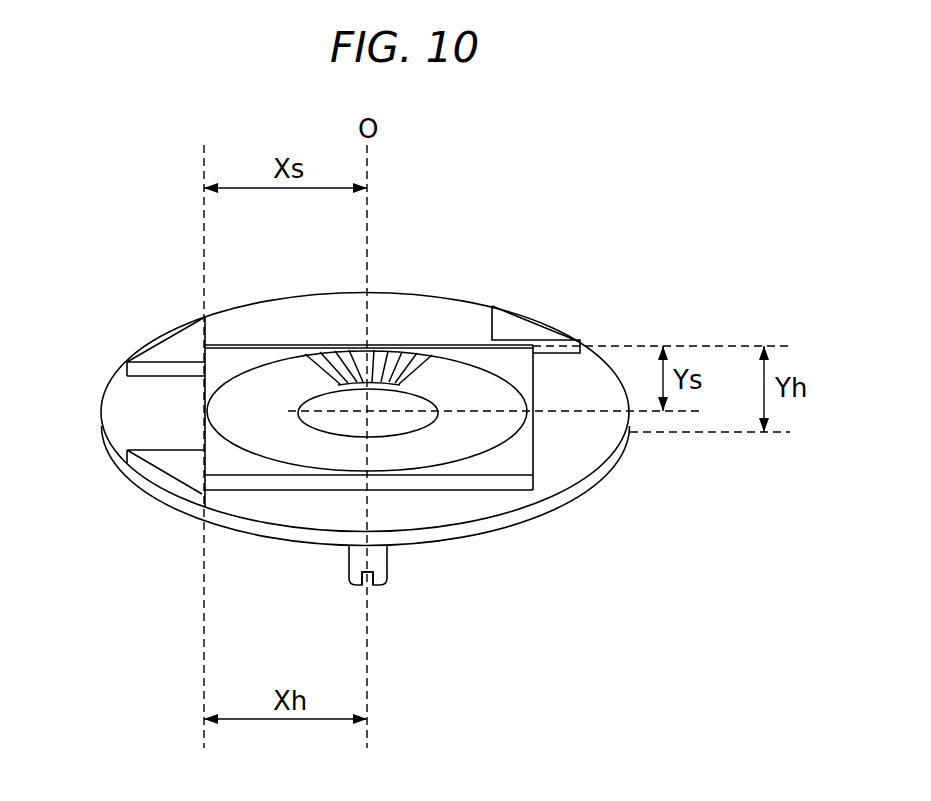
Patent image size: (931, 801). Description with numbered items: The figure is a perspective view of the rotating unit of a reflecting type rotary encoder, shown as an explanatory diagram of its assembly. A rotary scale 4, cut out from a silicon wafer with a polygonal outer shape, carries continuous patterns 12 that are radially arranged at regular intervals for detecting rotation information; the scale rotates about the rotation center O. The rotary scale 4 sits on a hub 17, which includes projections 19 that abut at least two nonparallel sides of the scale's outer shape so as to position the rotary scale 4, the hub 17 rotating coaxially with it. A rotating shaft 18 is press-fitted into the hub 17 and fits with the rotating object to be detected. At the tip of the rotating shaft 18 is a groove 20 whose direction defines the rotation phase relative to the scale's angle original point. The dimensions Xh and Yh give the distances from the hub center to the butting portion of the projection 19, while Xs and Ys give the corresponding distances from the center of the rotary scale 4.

The rotary scale 4 is at (210, 388).
The continuous patterns 12 is at (420, 366).
The hub 17 is at (441, 300).
The rotating shaft 18 is at (349, 572).
The projections 19 is at (183, 341).
The groove 20 is at (372, 588).